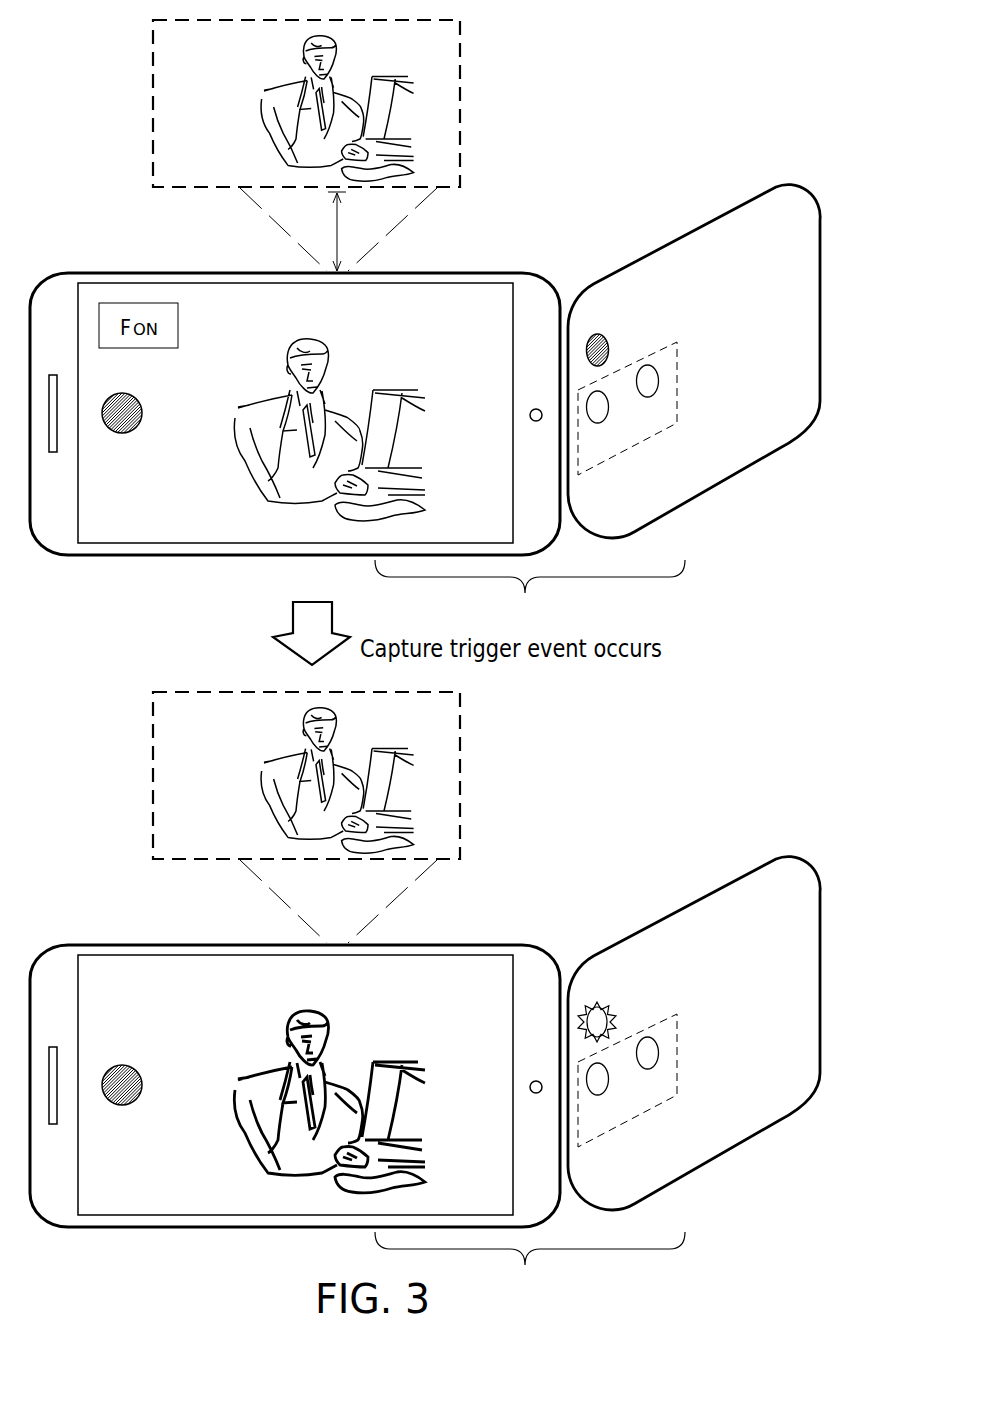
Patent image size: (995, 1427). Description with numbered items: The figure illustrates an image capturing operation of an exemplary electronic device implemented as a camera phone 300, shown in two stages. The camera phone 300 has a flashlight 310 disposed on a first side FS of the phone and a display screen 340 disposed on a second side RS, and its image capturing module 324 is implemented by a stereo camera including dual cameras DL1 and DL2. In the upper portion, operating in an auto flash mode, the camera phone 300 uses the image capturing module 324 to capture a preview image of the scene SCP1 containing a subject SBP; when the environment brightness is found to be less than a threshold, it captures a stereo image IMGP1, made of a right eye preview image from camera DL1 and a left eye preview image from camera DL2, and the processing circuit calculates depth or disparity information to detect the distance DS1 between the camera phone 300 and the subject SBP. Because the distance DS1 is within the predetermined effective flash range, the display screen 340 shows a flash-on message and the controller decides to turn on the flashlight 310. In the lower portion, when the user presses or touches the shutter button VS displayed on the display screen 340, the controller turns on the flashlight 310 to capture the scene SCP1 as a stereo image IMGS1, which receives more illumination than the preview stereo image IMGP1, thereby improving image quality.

The camera phone 300 is at (530, 930).
The flashlight 310 is at (606, 344).
The image capturing module 324 is at (678, 372).
The display screen 340 is at (135, 284).
The first side FS is at (105, 270).
The second side RS is at (714, 216).
The distance DS1 is at (357, 231).
The subject SBP is at (303, 722).
The scene SCP1 is at (461, 86).
The shutter button VS is at (122, 759).
The stereo image (preview image) IMGP1 is at (135, 528).
The stereo image (actually captured image) IMGS1 is at (135, 1200).
The camera DL1 is at (606, 759).
The camera DL2 is at (645, 732).